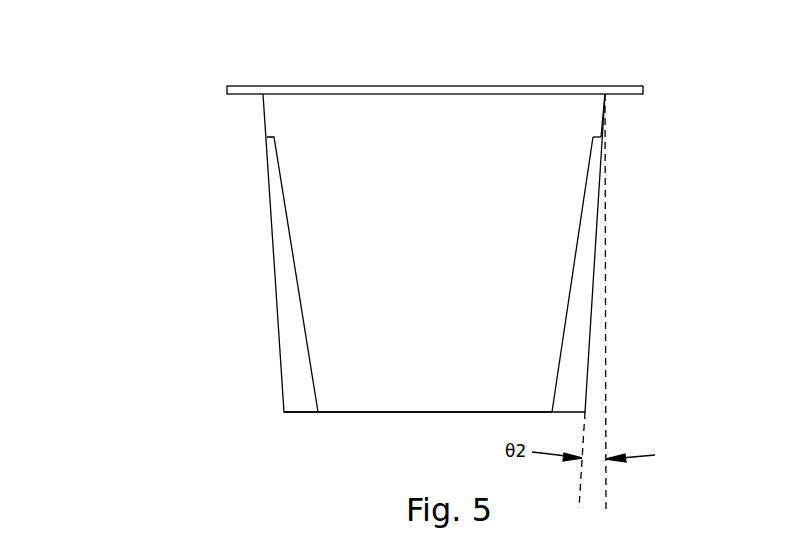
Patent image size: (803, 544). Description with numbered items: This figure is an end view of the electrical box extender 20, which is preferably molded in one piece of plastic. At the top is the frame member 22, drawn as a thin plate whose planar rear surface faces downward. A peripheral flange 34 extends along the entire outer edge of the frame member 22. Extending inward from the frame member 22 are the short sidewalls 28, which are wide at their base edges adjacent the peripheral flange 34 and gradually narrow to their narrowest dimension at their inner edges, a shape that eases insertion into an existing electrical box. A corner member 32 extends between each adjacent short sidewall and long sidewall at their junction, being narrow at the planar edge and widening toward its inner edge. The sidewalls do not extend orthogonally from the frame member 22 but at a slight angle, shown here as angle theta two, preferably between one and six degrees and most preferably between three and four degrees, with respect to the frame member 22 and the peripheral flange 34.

The one-piece box extender 20 is at (176, 306).
The frame member 22 is at (548, 90).
The short sidewalls 28 is at (451, 254).
The corner member 32 is at (300, 405).
The peripheral flange 34 is at (623, 96).